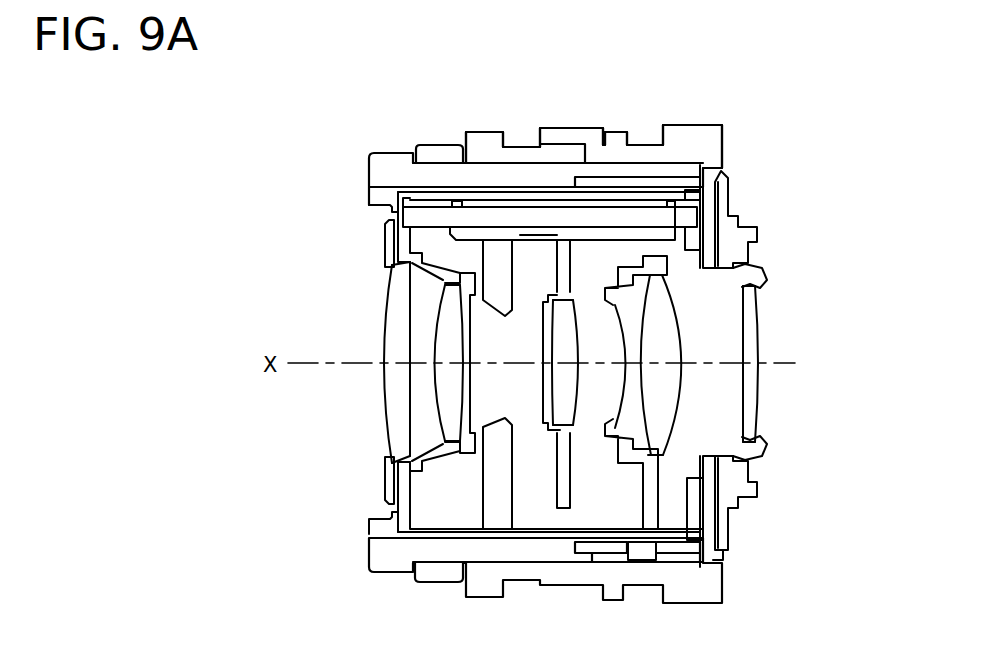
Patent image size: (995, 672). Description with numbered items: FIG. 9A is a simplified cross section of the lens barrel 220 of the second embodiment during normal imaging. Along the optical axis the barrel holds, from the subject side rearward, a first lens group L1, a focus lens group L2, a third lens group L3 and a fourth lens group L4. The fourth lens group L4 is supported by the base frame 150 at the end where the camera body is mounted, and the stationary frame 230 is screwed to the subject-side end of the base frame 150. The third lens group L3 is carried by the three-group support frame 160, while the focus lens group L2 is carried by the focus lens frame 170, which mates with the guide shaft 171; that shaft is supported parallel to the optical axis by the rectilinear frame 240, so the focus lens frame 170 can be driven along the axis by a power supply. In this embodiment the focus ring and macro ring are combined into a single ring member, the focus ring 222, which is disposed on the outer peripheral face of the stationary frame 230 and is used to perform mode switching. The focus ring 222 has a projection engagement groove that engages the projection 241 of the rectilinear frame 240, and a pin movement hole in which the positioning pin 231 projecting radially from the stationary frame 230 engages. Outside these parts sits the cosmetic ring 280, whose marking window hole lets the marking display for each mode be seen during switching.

The lens barrel 220 is at (754, 133).
The stationary frame 230 is at (388, 178).
The cosmetic ring 280 is at (478, 142).
The focus ring 222 is at (560, 148).
The positioning pin 231 is at (615, 135).
The rectilinear frame 240 is at (382, 198).
The projection 241 is at (640, 548).
The base frame 150 is at (712, 178).
The three-group support frame 160 is at (653, 502).
The focus lens frame 170 is at (565, 286).
The guide shaft 171 is at (571, 263).
The first lens group L1 is at (397, 412).
The focus lens group L2 is at (553, 408).
The third lens group L3 is at (630, 422).
The fourth lens group L4 is at (750, 403).